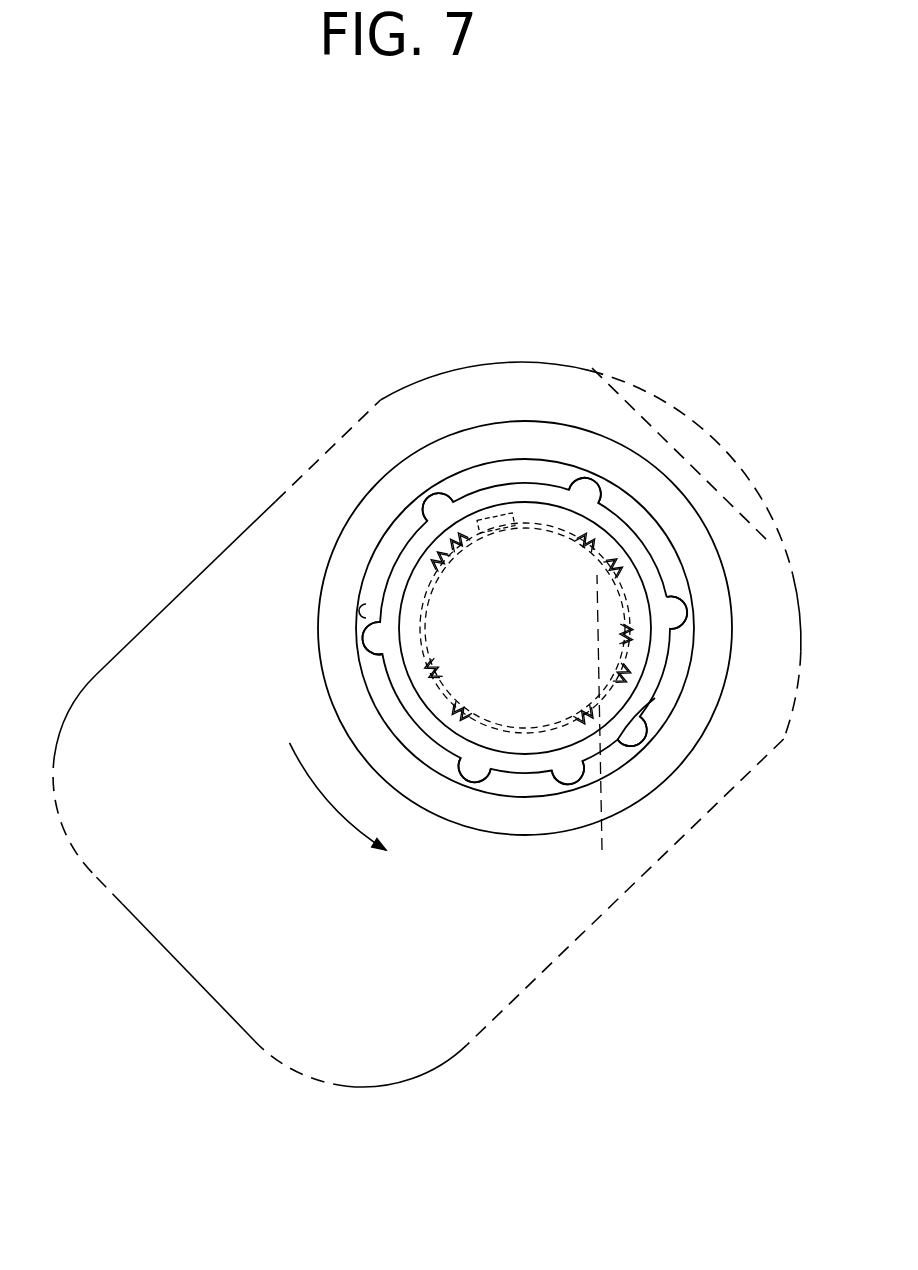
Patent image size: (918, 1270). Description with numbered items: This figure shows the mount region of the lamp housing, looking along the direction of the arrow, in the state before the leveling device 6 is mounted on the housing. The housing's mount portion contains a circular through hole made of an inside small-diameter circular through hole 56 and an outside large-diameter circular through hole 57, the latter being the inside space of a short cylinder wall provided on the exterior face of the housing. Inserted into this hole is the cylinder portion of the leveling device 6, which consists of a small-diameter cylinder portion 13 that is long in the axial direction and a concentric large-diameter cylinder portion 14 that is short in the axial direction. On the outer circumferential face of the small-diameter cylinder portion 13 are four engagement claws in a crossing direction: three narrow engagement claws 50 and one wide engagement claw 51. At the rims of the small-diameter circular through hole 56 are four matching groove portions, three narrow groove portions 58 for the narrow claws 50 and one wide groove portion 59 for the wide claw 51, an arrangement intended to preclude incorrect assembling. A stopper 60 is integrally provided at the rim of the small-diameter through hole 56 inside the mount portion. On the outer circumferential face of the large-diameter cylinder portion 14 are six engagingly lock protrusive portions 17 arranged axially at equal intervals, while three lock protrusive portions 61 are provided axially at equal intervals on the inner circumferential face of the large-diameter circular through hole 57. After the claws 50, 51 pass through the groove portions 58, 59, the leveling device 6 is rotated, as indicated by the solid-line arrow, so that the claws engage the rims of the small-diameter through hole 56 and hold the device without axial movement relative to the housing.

The leveling device 6 is at (148, 628).
The small-diameter cylinder portion 13 is at (617, 658).
The large-diameter cylinder portion 14 is at (402, 668).
The engagingly lock protrusive portion 17 is at (425, 505).
The narrow engagement claw 50 is at (427, 547).
The wide engagement claw 51 is at (605, 727).
The small-diameter circular through hole 56 is at (607, 654).
The large-diameter circular through hole 57 is at (360, 600).
The narrow groove portion 58 is at (468, 545).
The wide groove portion 59 is at (650, 697).
The stopper 60 is at (510, 520).
The lock protrusive portion 61 is at (358, 567).